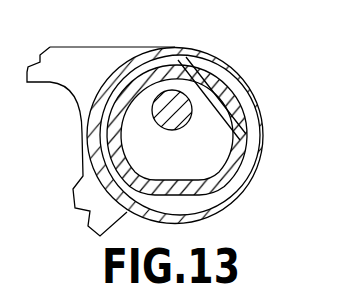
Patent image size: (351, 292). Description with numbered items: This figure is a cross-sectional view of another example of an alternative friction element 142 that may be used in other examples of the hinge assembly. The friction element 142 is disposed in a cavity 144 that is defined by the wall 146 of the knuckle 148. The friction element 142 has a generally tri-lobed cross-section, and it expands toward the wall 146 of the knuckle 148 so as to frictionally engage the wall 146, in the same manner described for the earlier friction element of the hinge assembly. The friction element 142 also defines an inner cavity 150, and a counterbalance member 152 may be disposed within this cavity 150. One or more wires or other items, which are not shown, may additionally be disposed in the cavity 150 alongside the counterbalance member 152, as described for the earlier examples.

The friction element 142 is at (226, 107).
The cavity 144 is at (107, 75).
The wall 146 is at (175, 205).
The knuckle 148 is at (239, 72).
The cavity 150 is at (205, 151).
The counterbalance member 152 is at (185, 80).